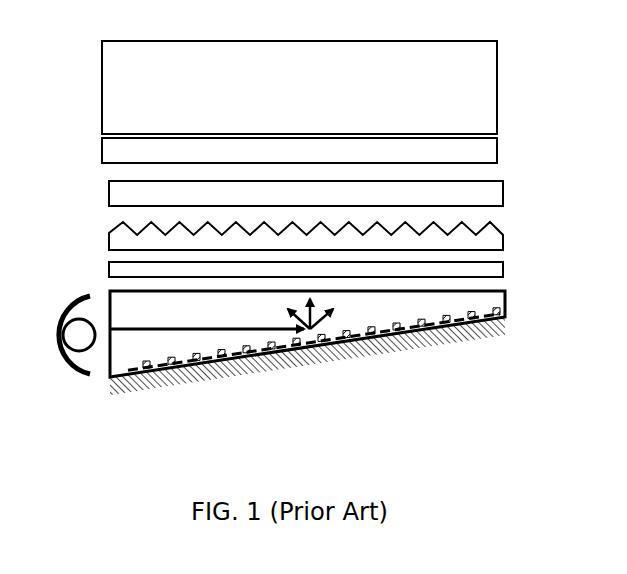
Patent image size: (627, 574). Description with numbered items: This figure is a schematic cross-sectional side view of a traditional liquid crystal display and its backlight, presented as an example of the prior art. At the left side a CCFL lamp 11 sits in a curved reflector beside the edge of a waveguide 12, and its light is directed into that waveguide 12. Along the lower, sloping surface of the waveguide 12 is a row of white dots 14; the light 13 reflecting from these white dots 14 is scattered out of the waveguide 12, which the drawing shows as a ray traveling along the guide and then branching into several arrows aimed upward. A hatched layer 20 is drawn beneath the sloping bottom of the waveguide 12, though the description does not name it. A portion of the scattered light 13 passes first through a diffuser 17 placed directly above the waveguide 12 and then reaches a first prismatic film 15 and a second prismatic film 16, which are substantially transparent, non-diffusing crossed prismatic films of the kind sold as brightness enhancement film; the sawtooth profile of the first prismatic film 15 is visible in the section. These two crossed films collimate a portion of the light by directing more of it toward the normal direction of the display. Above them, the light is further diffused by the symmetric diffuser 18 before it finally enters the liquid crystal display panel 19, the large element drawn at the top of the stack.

The CCFL lamp 11 is at (82, 339).
The waveguide 12 is at (505, 308).
The light 13 is at (318, 318).
The white dots 14 is at (475, 320).
The first prismatic film 15 is at (503, 237).
The second prismatic film 16 is at (503, 197).
The diffuser 17 is at (493, 272).
The symmetric diffuser 18 is at (483, 152).
The liquid crystal display panel 19 is at (482, 81).
The reflector sheet 20 is at (425, 338).